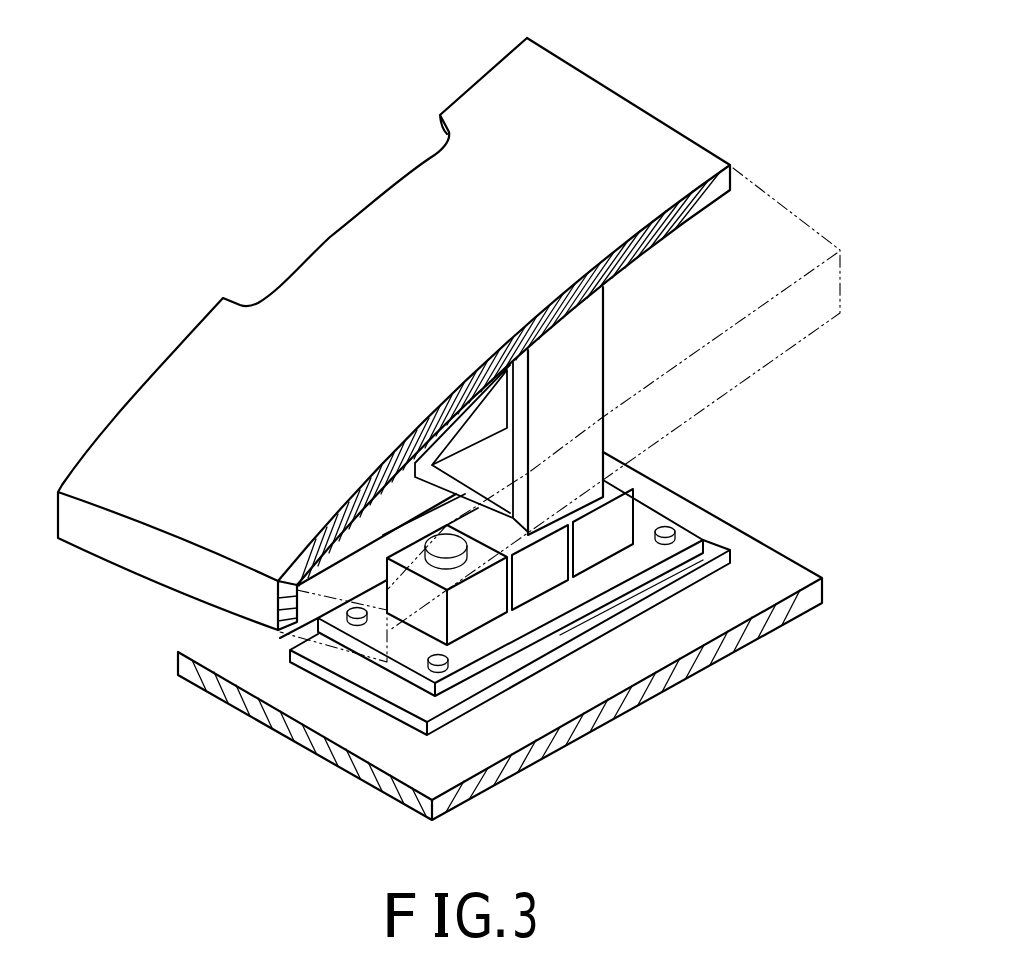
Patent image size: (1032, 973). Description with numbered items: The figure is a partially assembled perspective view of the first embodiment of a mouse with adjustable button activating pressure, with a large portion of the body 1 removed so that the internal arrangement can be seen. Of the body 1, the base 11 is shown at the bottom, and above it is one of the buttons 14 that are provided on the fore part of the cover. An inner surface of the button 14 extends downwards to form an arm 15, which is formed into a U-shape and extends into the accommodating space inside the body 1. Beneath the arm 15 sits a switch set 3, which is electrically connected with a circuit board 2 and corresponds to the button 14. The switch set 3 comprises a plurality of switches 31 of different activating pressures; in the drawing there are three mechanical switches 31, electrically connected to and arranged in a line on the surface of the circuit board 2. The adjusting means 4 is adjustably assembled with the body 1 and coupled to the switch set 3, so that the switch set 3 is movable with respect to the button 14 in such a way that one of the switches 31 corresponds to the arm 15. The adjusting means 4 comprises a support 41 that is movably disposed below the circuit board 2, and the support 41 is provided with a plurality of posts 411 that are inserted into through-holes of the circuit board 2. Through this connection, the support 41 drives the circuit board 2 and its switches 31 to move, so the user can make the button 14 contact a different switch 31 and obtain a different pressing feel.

The body 1 is at (240, 715).
The base 11 is at (545, 762).
The button 14 is at (583, 103).
The arm 15 is at (583, 373).
The circuit board 2 is at (670, 512).
The switch set 3 is at (643, 477).
The switch 31 is at (598, 537).
The adjusting means 4 is at (735, 558).
The support 41 is at (667, 585).
The post 411 is at (676, 531).